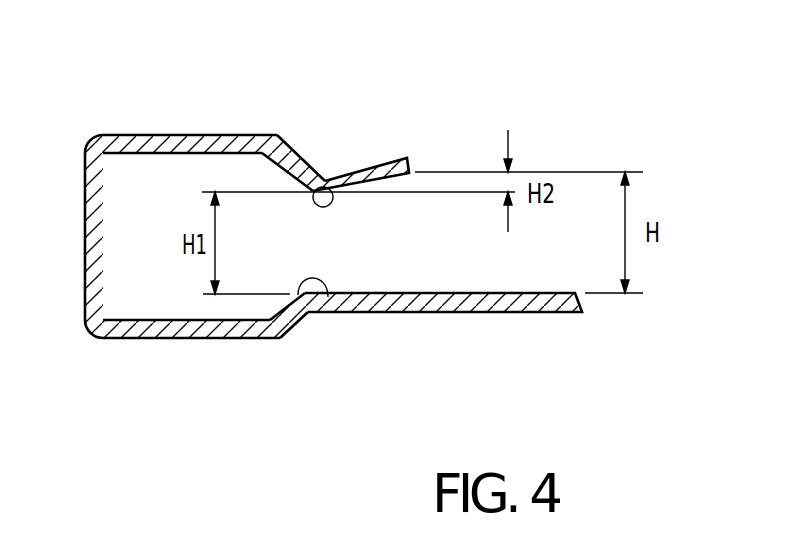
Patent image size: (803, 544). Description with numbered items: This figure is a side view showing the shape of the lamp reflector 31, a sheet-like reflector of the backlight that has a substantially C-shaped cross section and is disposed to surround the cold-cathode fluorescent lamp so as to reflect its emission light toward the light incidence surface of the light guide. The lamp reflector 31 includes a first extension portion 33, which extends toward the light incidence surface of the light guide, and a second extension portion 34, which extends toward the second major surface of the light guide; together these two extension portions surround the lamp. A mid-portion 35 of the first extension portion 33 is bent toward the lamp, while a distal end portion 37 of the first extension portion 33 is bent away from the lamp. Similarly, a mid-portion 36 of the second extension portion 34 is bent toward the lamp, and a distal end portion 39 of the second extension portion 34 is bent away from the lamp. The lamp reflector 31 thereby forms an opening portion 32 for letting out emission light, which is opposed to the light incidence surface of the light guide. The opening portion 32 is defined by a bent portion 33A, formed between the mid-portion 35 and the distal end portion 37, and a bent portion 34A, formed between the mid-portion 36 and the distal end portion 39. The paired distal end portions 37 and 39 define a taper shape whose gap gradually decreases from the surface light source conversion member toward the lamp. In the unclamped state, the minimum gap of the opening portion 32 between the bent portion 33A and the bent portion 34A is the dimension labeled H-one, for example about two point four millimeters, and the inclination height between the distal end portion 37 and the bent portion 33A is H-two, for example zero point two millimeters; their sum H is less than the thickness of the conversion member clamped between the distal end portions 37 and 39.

The lamp reflector 31 is at (158, 133).
The opening portion 32 is at (380, 249).
The first extension portion 33 is at (227, 140).
The bent portion 33A is at (334, 190).
The second extension portion 34 is at (203, 330).
The bent portion 34A is at (328, 297).
The mid-portion 35 is at (298, 150).
The mid-portion 36 is at (293, 330).
The distal end portion 37 is at (394, 161).
The distal end portion 39 is at (420, 313).